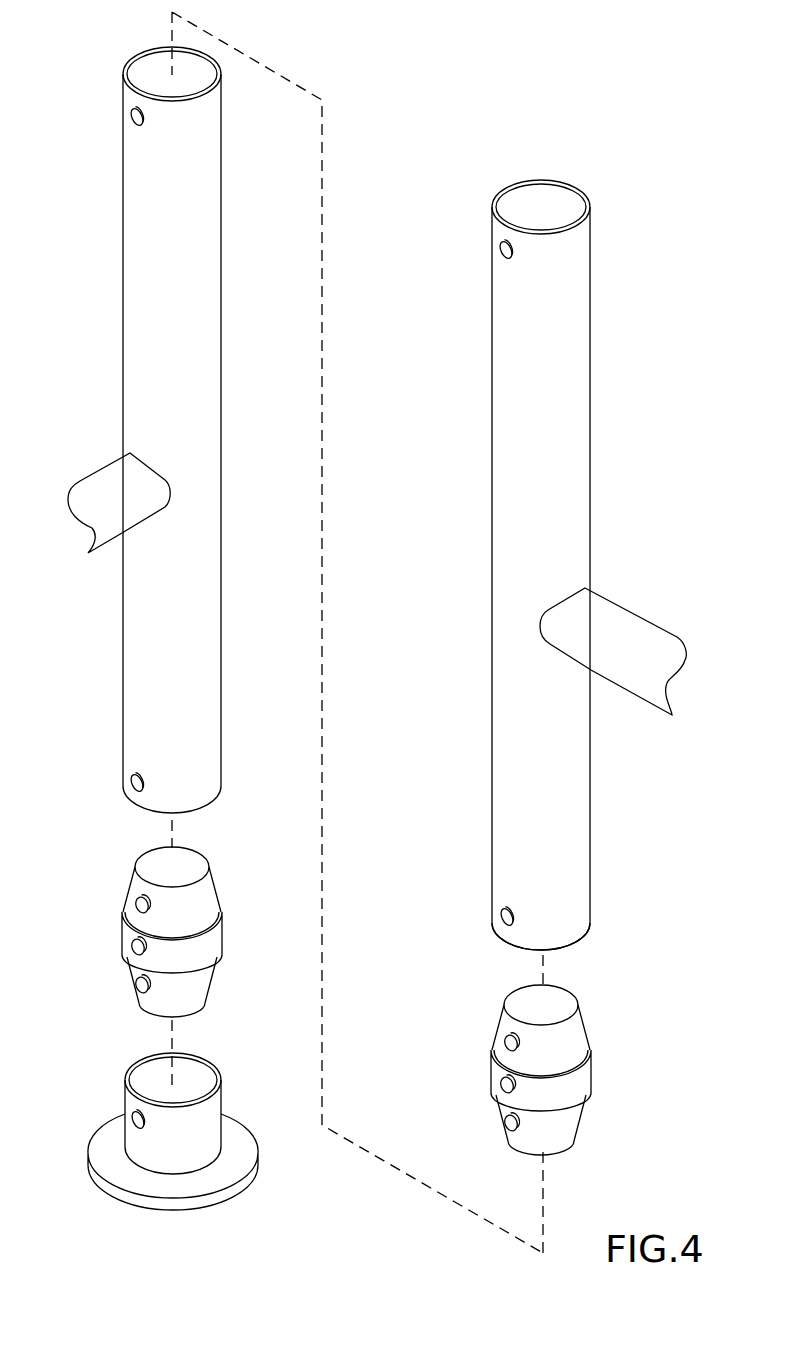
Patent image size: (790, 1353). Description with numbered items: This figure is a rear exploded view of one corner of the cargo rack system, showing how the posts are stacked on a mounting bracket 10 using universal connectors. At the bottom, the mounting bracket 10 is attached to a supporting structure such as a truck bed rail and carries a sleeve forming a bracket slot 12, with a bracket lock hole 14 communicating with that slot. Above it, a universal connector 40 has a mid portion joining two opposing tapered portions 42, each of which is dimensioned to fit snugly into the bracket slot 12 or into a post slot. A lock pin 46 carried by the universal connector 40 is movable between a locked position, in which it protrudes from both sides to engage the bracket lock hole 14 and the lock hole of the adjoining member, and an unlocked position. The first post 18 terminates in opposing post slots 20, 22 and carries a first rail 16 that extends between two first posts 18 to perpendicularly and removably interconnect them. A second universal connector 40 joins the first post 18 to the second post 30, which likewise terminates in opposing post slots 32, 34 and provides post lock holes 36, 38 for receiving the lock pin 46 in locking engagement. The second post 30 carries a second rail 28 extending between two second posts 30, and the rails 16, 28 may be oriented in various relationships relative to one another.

The mounting bracket 10 is at (112, 1183).
The bracket slot 12 is at (135, 1080).
The bracket lock hole 14 is at (142, 1128).
The first rail 16 is at (93, 480).
The first post 18 is at (130, 192).
The post slot 20 is at (133, 806).
The post slot 22 is at (137, 68).
The second rail 28 is at (634, 631).
The second post 30 is at (500, 327).
The post slot 32 is at (502, 942).
The post slot 34 is at (510, 200).
The post lock hole 36 is at (510, 913).
The post lock hole 38 is at (510, 258).
The universal connector 40 is at (148, 865).
The tapered portion 42 is at (207, 890).
The lock pin 46 is at (134, 906).